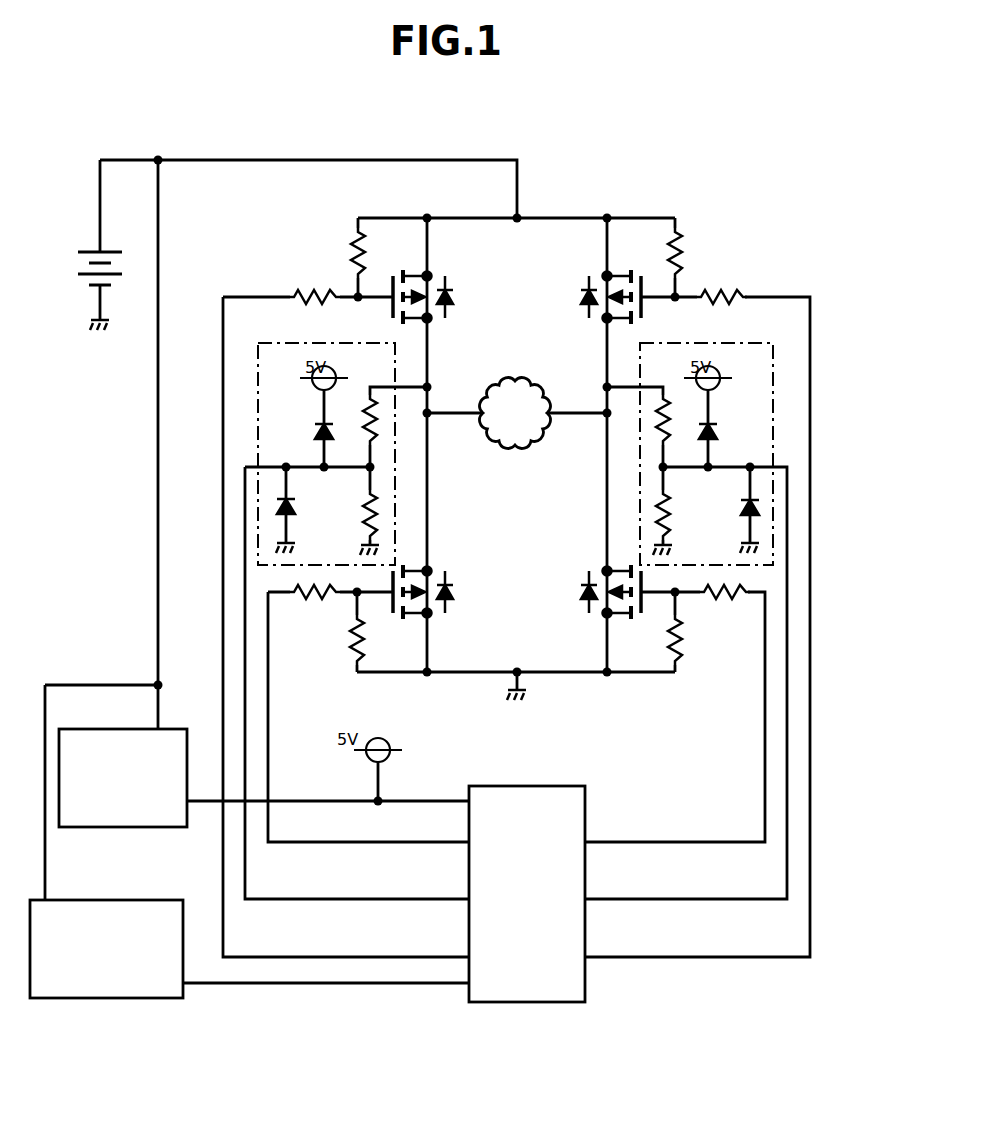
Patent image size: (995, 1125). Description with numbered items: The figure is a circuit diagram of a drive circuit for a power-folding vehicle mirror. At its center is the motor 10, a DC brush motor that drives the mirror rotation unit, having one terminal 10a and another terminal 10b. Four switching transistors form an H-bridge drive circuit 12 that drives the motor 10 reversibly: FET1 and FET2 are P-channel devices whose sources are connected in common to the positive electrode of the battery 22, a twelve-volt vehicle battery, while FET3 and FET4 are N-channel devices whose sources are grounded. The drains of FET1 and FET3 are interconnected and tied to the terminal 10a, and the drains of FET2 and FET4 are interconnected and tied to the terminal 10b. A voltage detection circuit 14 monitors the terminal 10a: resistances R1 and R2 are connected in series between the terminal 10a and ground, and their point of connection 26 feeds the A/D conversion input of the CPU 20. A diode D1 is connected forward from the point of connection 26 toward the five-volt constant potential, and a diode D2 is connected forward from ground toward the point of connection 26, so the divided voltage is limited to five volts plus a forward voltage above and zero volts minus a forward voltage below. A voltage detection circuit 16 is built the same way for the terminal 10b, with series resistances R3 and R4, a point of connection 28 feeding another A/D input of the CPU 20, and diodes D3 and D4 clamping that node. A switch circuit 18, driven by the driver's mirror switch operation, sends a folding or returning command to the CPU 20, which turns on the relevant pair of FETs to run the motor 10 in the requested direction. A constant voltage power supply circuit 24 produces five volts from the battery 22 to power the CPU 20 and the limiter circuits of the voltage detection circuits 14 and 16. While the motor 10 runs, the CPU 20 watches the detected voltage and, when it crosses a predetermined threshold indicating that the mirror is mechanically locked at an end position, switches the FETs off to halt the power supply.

The motor 10 is at (515, 380).
The one terminal 10a is at (458, 413).
The other terminal 10b is at (578, 413).
The H-bridge drive circuit 12 is at (588, 197).
The voltage detection circuit 14 is at (258, 405).
The voltage detection circuit 16 is at (773, 418).
The switch circuit 18 is at (100, 1000).
The CPU 20 is at (528, 1003).
The battery 22 is at (90, 252).
The constant voltage power supply circuit 24 is at (115, 829).
The point of connection 26 is at (372, 468).
The point of connection 28 is at (661, 468).
The P-channel FET FET1 is at (463, 269).
The P-channel FET FET2 is at (585, 284).
The N-channel FET FET3 is at (458, 567).
The N-channel FET FET4 is at (584, 580).
The diode D1 is at (316, 433).
The diode D2 is at (294, 512).
The diode D3 is at (716, 433).
The diode D4 is at (741, 513).
The resistance R1 is at (362, 422).
The resistance R2 is at (361, 520).
The resistance R3 is at (668, 428).
The resistance R4 is at (670, 504).